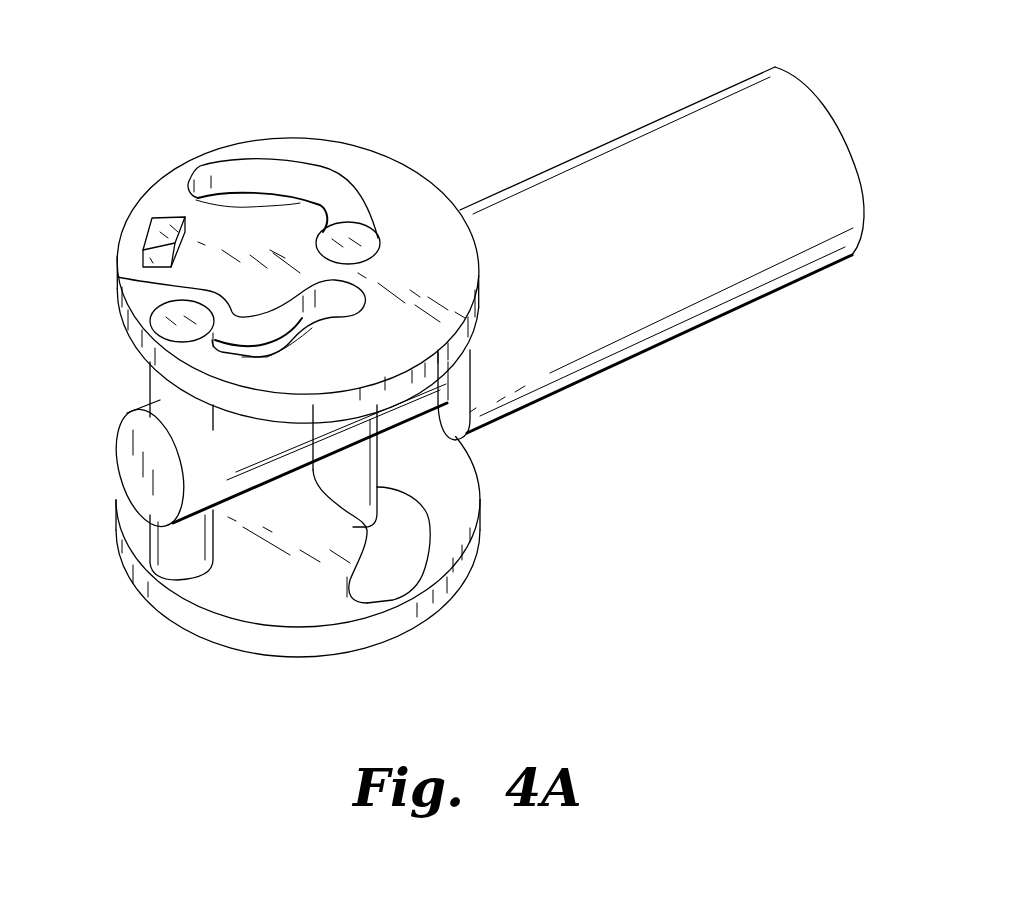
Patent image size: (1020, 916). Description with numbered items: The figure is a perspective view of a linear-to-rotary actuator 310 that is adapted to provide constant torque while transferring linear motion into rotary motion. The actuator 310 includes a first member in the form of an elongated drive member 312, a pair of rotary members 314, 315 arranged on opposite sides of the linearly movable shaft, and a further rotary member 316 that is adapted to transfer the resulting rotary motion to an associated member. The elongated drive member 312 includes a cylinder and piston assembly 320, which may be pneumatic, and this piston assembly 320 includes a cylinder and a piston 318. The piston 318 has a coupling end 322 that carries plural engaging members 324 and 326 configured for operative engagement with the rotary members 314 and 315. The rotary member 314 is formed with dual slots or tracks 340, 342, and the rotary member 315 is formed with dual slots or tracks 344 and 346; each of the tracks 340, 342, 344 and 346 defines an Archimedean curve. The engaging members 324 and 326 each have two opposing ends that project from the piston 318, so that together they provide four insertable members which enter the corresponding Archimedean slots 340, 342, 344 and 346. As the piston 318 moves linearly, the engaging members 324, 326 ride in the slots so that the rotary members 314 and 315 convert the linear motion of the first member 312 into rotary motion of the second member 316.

The linear-to-rotary actuator 310 is at (622, 114).
The elongated drive member 312 is at (654, 269).
The rotary member 314 is at (373, 168).
The rotary member 315 is at (250, 583).
The rotary member 316 is at (160, 218).
The piston 318 is at (197, 440).
The cylinder and piston assembly 320 is at (468, 433).
The coupling end 322 is at (120, 455).
The engaging member 324 is at (170, 558).
The engaging member 326 is at (455, 495).
The slot 340 is at (256, 172).
The slot 342 is at (226, 320).
The slot 344 is at (407, 573).
The slot 346 is at (281, 491).